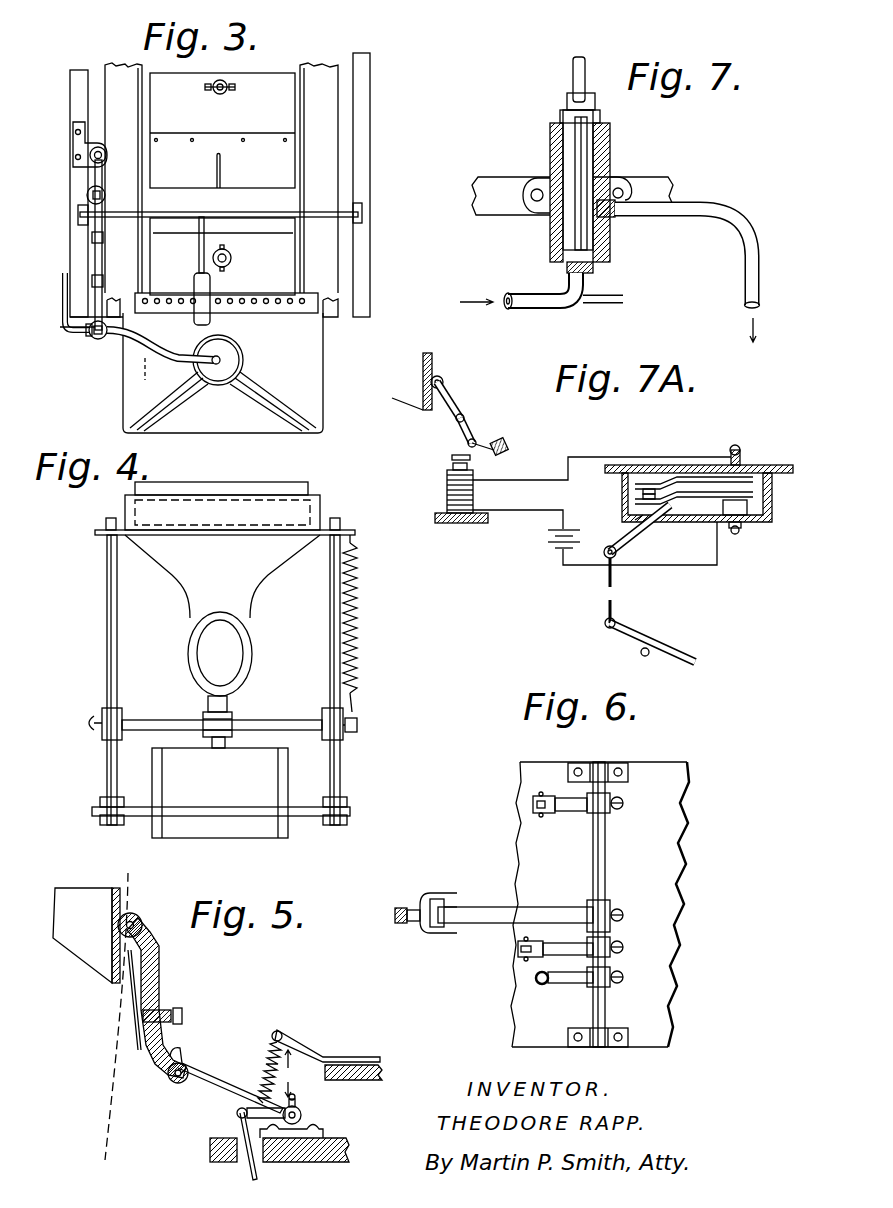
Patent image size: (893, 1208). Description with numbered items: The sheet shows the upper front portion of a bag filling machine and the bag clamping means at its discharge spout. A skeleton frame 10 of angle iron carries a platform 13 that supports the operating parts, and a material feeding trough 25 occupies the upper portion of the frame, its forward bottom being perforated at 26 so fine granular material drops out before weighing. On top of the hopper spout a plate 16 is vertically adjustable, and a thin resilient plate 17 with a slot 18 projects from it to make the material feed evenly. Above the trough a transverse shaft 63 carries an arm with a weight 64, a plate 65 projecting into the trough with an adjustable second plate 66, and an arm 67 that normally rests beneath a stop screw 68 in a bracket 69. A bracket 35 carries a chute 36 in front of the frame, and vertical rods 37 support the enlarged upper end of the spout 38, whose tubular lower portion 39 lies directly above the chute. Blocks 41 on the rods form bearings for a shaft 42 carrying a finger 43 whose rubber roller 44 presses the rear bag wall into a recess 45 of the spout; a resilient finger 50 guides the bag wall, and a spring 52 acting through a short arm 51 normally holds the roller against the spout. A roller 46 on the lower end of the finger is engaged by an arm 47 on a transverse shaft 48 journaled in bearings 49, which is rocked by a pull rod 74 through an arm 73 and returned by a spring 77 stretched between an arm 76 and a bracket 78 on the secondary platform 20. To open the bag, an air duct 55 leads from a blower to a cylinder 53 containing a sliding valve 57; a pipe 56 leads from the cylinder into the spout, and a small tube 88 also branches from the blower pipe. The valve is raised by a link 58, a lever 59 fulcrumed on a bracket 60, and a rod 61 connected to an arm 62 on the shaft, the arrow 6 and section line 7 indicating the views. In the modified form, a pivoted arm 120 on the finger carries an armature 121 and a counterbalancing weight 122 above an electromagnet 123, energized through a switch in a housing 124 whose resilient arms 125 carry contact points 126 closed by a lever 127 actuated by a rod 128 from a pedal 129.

In FIG. 5, the arrow 6 is at (289, 1073).
In FIG. 3, the section line 7 is at (62, 331).
In FIG. 3, the skeleton frame 10 is at (72, 249).
In FIG. 7, the skeleton frame 10 is at (472, 196).
In FIG. 5, the platform 13 is at (210, 1148).
In FIG. 6, the platform 13 is at (660, 922).
In FIG. 3, the plate 16 is at (222, 130).
In FIG. 3, the resilient plate 17 is at (173, 147).
In FIG. 3, the slot 18 is at (221, 164).
In FIG. 5, the secondary platform 20 is at (375, 1065).
In FIG. 3, the material feeding trough 25 is at (240, 306).
In FIG. 4, the material feeding trough 25 is at (310, 487).
In FIG. 3, the perforations 26 is at (300, 306).
In FIG. 4, the bracket 35 is at (300, 807).
In FIG. 4, the chute 36 is at (238, 825).
In FIG. 4, the rods 37 is at (107, 762).
In FIG. 3, the spout 38 is at (123, 392).
In FIG. 4, the spout 38 is at (125, 503).
In FIG. 4, the lower portion of spout 39 is at (190, 618).
In FIG. 5, the lower portion of spout 39 is at (110, 965).
In FIG. 4, the blocks 41 is at (118, 710).
In FIG. 4, the shaft 42 is at (176, 714).
In FIG. 5, the shaft 42 is at (162, 1010).
In FIG. 5, the finger 43 is at (160, 973).
In FIG. 7A, the finger 43 is at (453, 401).
In FIG. 6, the finger 43 is at (404, 908).
In FIG. 5, the roller 44 is at (140, 917).
In FIG. 7A, the roller 44 is at (441, 377).
In FIG. 5, the recess 45 is at (112, 922).
In FIG. 7A, the recess 45 is at (423, 382).
In FIG. 5, the roller 46 is at (172, 1083).
In FIG. 6, the roller 46 is at (440, 899).
In FIG. 5, the arm 47 is at (210, 1074).
In FIG. 6, the arm 47 is at (479, 907).
In FIG. 5, the shaft 48 is at (322, 1130).
In FIG. 6, the shaft 48 is at (606, 864).
In FIG. 6, the bearings 49 is at (600, 763).
In FIG. 5, the resilient finger 50 is at (128, 1002).
In FIG. 4, the arm 51 is at (358, 726).
In FIG. 4, the retractile spring 52 is at (357, 646).
In FIG. 3, the cylinder 53 is at (97, 340).
In FIG. 7, the cylinder 53 is at (550, 150).
In FIG. 3, the air duct 55 is at (66, 293).
In FIG. 7, the air duct 55 is at (527, 294).
In FIG. 3, the pipe 56 is at (162, 352).
In FIG. 7, the pipe 56 is at (685, 216).
In FIG. 7, the valve 57 is at (582, 168).
In FIG. 3, the link 58 is at (88, 335).
In FIG. 7, the link 58 is at (573, 73).
In FIG. 3, the lever 59 is at (95, 263).
In FIG. 3, the bracket 60 is at (102, 284).
In FIG. 3, the rod 61 is at (92, 237).
In FIG. 6, the rod 61 is at (533, 805).
In FIG. 6, the arm 62 is at (570, 812).
In FIG. 3, the shaft 63 is at (322, 202).
In FIG. 3, the weight 64 is at (193, 285).
In FIG. 3, the plate 65 is at (260, 229).
In FIG. 3, the second plate 66 is at (280, 268).
In FIG. 3, the arm 67 is at (92, 171).
In FIG. 3, the stop screw 68 is at (78, 159).
In FIG. 3, the bracket 69 is at (75, 144).
In FIG. 5, the arm 73 is at (240, 1110).
In FIG. 6, the arm 73 is at (575, 946).
In FIG. 5, the pull rod 74 is at (250, 1173).
In FIG. 6, the pull rod 74 is at (518, 949).
In FIG. 5, the arm 76 is at (302, 1111).
In FIG. 6, the arm 76 is at (570, 985).
In FIG. 5, the retractile spring 77 is at (265, 1055).
In FIG. 6, the retractile spring 77 is at (537, 985).
In FIG. 5, the bracket 78 is at (308, 1052).
In FIG. 7, the tube 88 is at (620, 286).
In FIG. 7A, the arm 120 is at (477, 441).
In FIG. 7A, the armature 121 is at (452, 458).
In FIG. 7A, the weight 122 is at (507, 450).
In FIG. 7A, the electromagnet 123 is at (447, 497).
In FIG. 7A, the housing 124 is at (750, 466).
In FIG. 7A, the resilient metal arms 125 is at (695, 475).
In FIG. 7A, the contact points 126 is at (642, 493).
In FIG. 7A, the lever 127 is at (633, 522).
In FIG. 7A, the rod 128 is at (607, 583).
In FIG. 7A, the pedal 129 is at (645, 643).